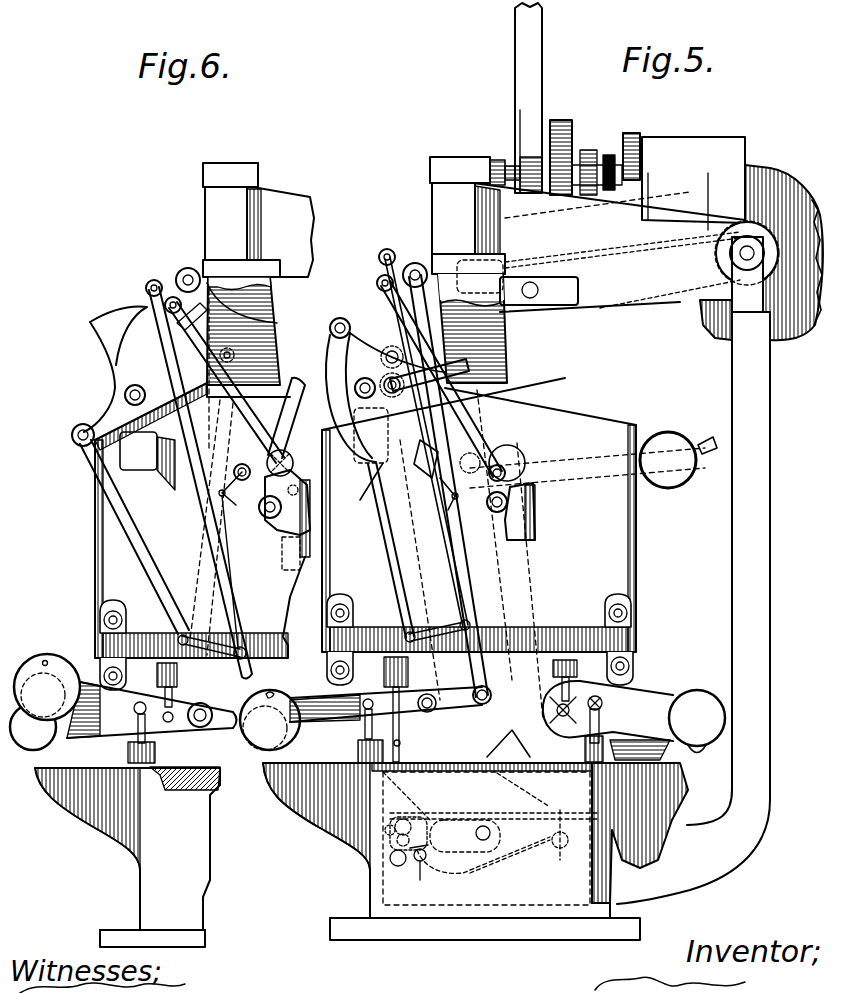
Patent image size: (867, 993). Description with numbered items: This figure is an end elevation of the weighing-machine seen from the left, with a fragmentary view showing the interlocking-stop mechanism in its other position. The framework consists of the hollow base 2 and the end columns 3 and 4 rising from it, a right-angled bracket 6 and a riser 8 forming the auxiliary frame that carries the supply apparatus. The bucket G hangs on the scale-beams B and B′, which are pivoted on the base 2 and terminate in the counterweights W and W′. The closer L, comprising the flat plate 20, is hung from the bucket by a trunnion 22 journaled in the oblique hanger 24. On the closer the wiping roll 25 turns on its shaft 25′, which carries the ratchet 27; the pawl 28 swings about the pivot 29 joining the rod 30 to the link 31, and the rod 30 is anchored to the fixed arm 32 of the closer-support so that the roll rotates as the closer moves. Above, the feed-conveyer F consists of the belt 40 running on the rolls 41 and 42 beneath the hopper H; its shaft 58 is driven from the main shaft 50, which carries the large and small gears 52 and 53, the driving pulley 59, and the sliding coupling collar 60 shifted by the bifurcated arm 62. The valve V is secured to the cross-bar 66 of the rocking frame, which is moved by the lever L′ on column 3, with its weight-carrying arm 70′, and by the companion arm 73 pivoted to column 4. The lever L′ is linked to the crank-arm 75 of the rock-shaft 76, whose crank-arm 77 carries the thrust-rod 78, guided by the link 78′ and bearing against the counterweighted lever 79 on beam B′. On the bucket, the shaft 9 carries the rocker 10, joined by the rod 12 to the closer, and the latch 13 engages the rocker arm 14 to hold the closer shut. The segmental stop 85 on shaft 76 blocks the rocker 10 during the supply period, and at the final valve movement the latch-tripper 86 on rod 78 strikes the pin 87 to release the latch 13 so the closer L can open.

In FIG. 6, the hollow base 2 is at (127, 857).
In FIG. 5, the hollow base 2 is at (377, 890).
In FIG. 6, the end frame or column 3 is at (278, 375).
In FIG. 5, the end frame or column 3 is at (506, 312).
In FIG. 6, the end frame or column 4 is at (275, 522).
In FIG. 5, the end frame or column 4 is at (536, 515).
In FIG. 6, the right-angled bracket 6 is at (258, 220).
In FIG. 5, the right-angled bracket 6 is at (465, 205).
In FIG. 5, the riser 8 is at (762, 475).
In FIG. 6, the shaft 9 is at (125, 393).
In FIG. 5, the shaft 9 is at (367, 400).
In FIG. 6, the rocker 10 is at (128, 345).
In FIG. 5, the rocker 10 is at (359, 491).
In FIG. 6, the rod 12 is at (110, 510).
In FIG. 5, the rod 12 is at (393, 548).
In FIG. 6, the latch 13 is at (238, 465).
In FIG. 5, the latch 13 is at (485, 483).
In FIG. 6, the arm of the rocker 14 is at (207, 318).
In FIG. 5, the arm of the rocker 14 is at (417, 460).
In FIG. 5, the closer plate 20 is at (474, 830).
In FIG. 5, the trunnion 22 is at (562, 848).
In FIG. 5, the hanger or bracket 24 is at (510, 743).
In FIG. 5, the wiping roll 25 is at (400, 843).
In FIG. 5, the roll shaft 25′ is at (410, 820).
In FIG. 5, the ratchet 27 is at (387, 830).
In FIG. 5, the operating pawl 28 is at (428, 845).
In FIG. 5, the pivot 29 is at (420, 875).
In FIG. 5, the rod or link 30 is at (520, 858).
In FIG. 5, the link 31 is at (397, 856).
In FIG. 5, the fixed arm or extension 32 is at (607, 858).
In FIG. 5, the endless belt 40 is at (640, 305).
In FIG. 5, the supporting roll 41 is at (534, 313).
In FIG. 5, the supporting roll 42 is at (740, 230).
In FIG. 5, the main shaft 50 is at (513, 163).
In FIG. 5, the large gear 52 is at (562, 120).
In FIG. 5, the small gear 53 is at (627, 133).
In FIG. 5, the feed-conveyer shaft 58 is at (740, 255).
In FIG. 5, the driver or pulley 59 is at (517, 115).
In FIG. 5, the coupling collar 60 is at (582, 152).
In FIG. 5, the bifurcated arm 62 is at (620, 200).
In FIG. 5, the transverse member or cross-bar 66 is at (470, 366).
In FIG. 5, the weight-carrying arm 70′ is at (593, 467).
In FIG. 6, the arm 73 is at (296, 415).
In FIG. 5, the arm 73 is at (482, 447).
In FIG. 6, the crank-arm 75 is at (160, 283).
In FIG. 5, the crank-arm 75 is at (377, 280).
In FIG. 6, the rock-shaft 76 is at (184, 268).
In FIG. 5, the rock-shaft 76 is at (416, 263).
In FIG. 6, the crank-arm 77 is at (172, 296).
In FIG. 5, the crank-arm 77 is at (395, 255).
In FIG. 6, the thrust-rod 78 is at (232, 604).
In FIG. 5, the thrust-rod 78 is at (463, 592).
In FIG. 6, the guide-link 78′ is at (197, 633).
In FIG. 5, the guide-link 78′ is at (432, 623).
In FIG. 6, the counterweighted lever 79 is at (125, 700).
In FIG. 5, the counterweighted lever 79 is at (455, 704).
In FIG. 6, the closer-limiting stop 85 is at (245, 318).
In FIG. 5, the closer-limiting stop 85 is at (430, 305).
In FIG. 6, the latch-tripper 86 is at (225, 490).
In FIG. 5, the latch-tripper 86 is at (440, 495).
In FIG. 6, the projecting pin 87 is at (230, 503).
In FIG. 5, the projecting pin 87 is at (448, 500).
In FIG. 5, the scale-beam B is at (608, 711).
In FIG. 6, the scale-beam B′ is at (120, 712).
In FIG. 5, the scale-beam B′ is at (318, 692).
In FIG. 5, the feed-conveyer F is at (609, 259).
In FIG. 6, the bucket G is at (105, 570).
In FIG. 5, the bucket G is at (636, 555).
In FIG. 5, the supply chute or hopper H is at (693, 183).
In FIG. 5, the closer L is at (491, 838).
In FIG. 5, the lever L′ is at (678, 472).
In FIG. 5, the valve V is at (442, 327).
In FIG. 5, the counterweight W is at (697, 721).
In FIG. 6, the counterweight W′ is at (32, 740).
In FIG. 5, the counterweight W′ is at (283, 703).